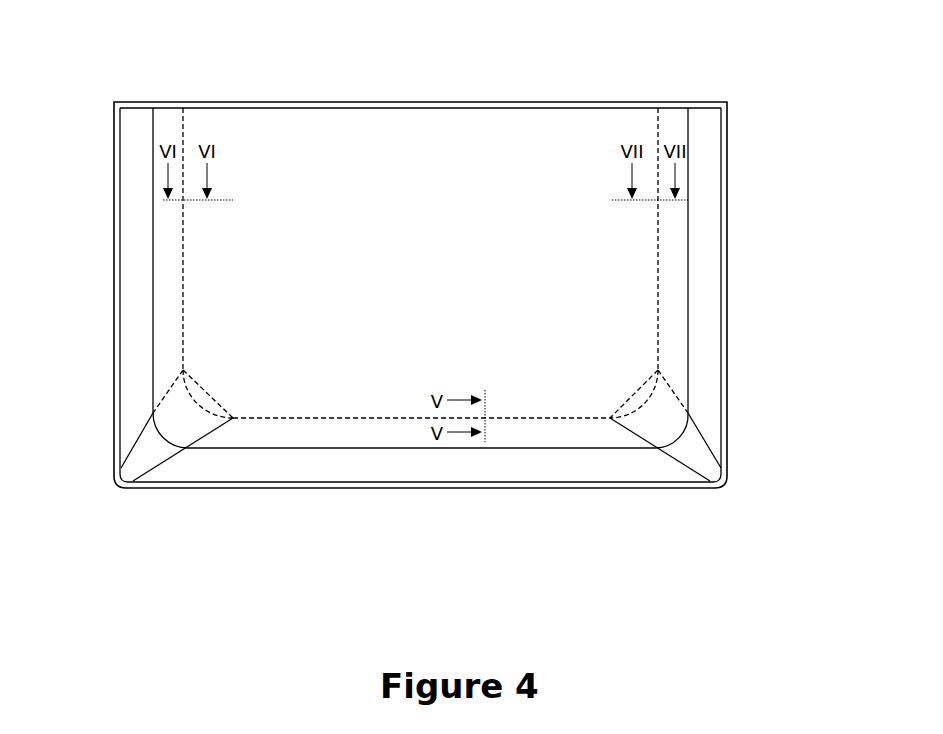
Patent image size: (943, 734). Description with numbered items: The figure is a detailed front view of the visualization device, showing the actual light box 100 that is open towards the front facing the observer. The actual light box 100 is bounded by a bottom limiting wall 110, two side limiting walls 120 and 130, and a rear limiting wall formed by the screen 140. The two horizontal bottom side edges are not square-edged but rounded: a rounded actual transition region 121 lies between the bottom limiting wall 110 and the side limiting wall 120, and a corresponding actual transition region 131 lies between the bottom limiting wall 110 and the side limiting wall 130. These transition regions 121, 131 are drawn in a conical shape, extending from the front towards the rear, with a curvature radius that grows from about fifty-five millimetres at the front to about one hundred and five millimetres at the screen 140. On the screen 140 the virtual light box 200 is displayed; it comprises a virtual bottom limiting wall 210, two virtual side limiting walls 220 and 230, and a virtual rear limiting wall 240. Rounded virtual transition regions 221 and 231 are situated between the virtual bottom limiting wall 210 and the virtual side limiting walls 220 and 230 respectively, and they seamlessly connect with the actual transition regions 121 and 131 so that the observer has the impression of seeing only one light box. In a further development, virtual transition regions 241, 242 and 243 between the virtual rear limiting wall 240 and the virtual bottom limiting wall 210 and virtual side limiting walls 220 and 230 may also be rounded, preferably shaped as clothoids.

The actual light box 100 is at (322, 472).
The bottom limiting wall 110 is at (503, 467).
The side limiting wall 120 is at (127, 298).
The actual transition region 121 is at (150, 453).
The side limiting wall 130 is at (708, 292).
The actual transition region 131 is at (693, 455).
The screen 140 is at (153, 277).
The virtual light box 200 is at (295, 130).
The virtual bottom limiting wall 210 is at (565, 425).
The virtual side limiting wall 220 is at (165, 318).
The virtual transition region 221 is at (187, 410).
The virtual side limiting wall 230 is at (673, 318).
The virtual transition region 231 is at (657, 410).
The virtual rear limiting wall 240 is at (560, 138).
The virtual transition region 241 is at (365, 418).
The virtual transition region 242 is at (185, 260).
The virtual transition region 243 is at (658, 244).